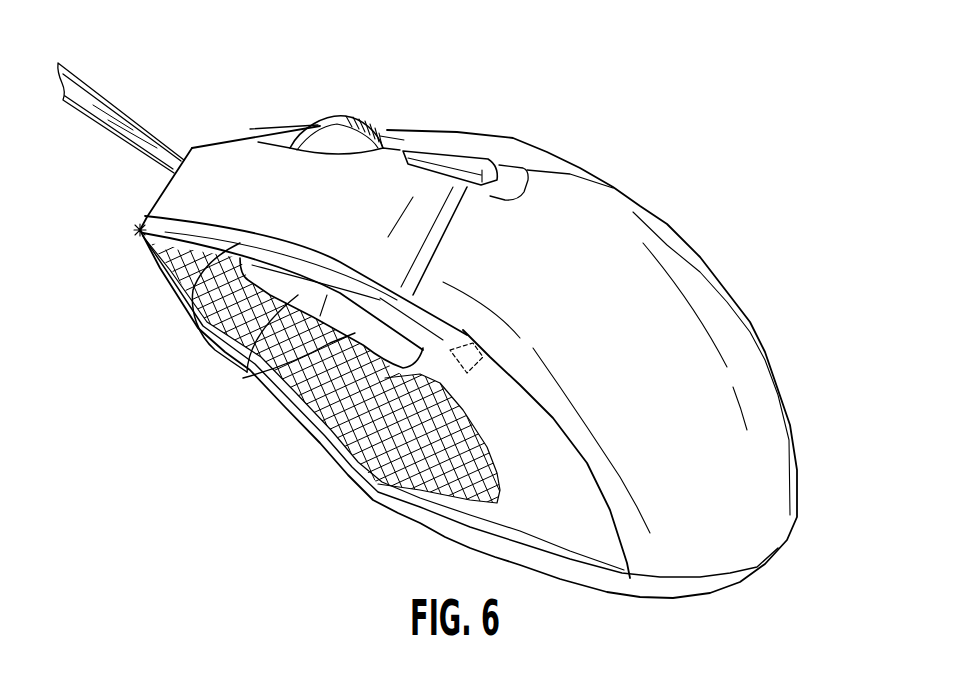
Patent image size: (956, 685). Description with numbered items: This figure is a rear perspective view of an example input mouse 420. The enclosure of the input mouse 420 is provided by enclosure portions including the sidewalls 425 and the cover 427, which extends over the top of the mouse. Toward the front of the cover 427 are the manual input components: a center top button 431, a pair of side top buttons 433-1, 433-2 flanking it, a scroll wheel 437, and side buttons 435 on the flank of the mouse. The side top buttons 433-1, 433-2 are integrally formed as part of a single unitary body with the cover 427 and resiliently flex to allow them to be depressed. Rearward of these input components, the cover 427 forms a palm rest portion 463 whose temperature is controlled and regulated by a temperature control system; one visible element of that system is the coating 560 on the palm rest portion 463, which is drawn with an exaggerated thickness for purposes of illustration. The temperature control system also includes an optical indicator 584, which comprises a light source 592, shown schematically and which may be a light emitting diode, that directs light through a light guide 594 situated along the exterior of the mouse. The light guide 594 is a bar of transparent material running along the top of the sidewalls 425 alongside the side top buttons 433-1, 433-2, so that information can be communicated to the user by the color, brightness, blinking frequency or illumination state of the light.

The input mouse 420 is at (234, 106).
The scroll wheel 437 is at (342, 114).
The side top button 433-2 is at (430, 137).
The center top button 431 is at (460, 155).
The cover 427 is at (615, 195).
The side top button 433-1 is at (167, 186).
The optical indicator 584 is at (140, 231).
The light guide 594 is at (190, 310).
The side buttons 435 is at (247, 371).
The sidewalls 425 is at (353, 462).
The light source 592 is at (466, 380).
The palm rest portion 463 is at (703, 323).
The coating 560 is at (733, 387).